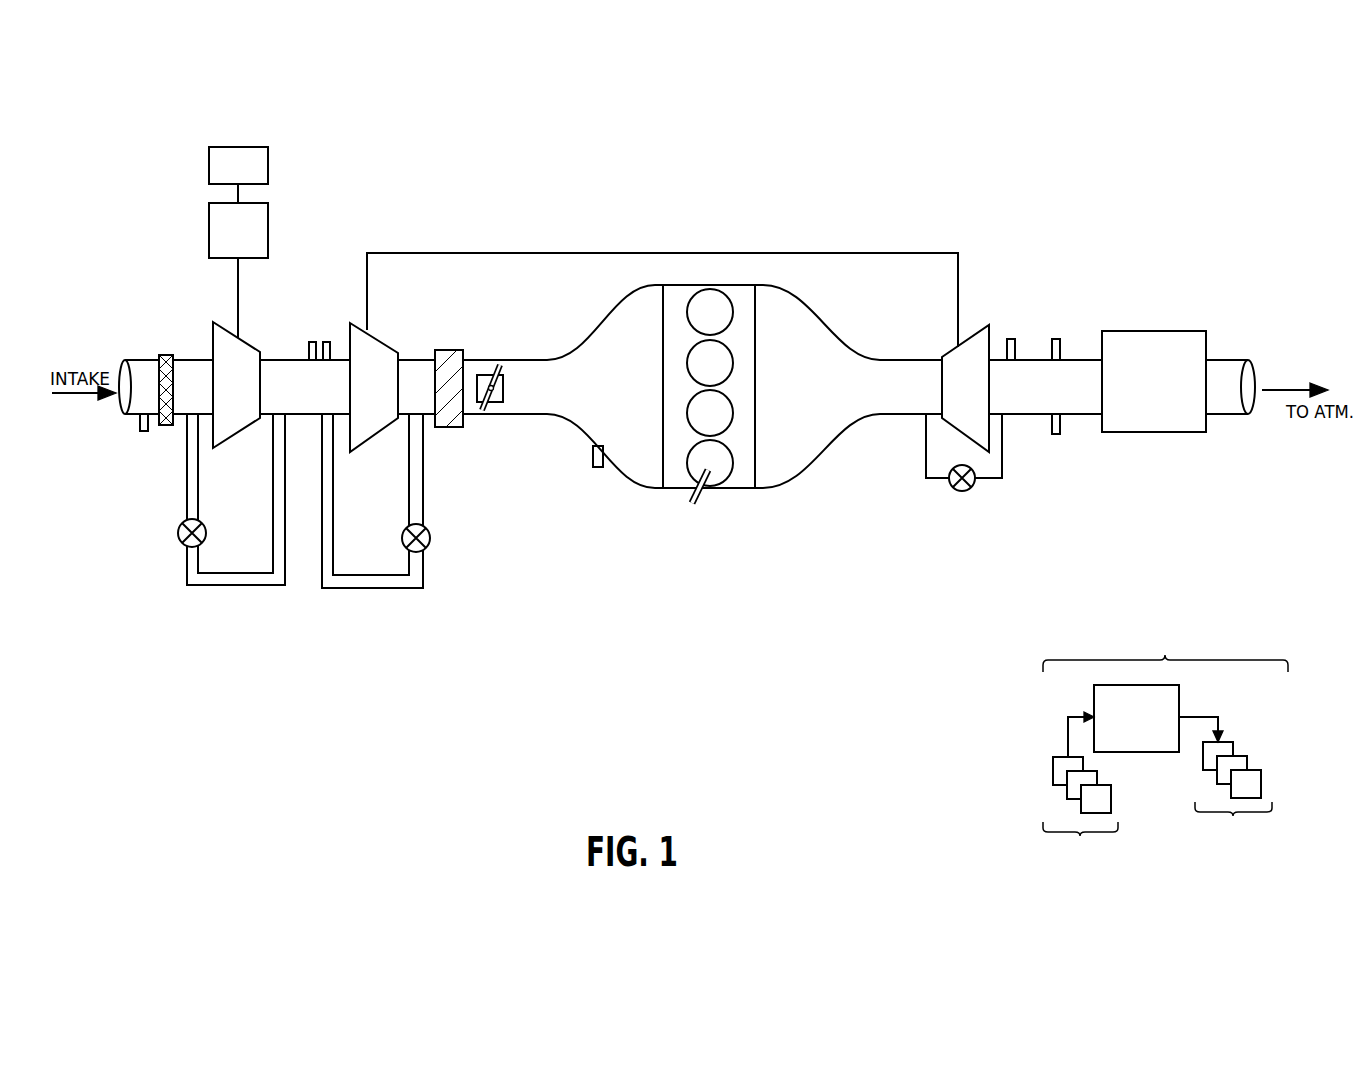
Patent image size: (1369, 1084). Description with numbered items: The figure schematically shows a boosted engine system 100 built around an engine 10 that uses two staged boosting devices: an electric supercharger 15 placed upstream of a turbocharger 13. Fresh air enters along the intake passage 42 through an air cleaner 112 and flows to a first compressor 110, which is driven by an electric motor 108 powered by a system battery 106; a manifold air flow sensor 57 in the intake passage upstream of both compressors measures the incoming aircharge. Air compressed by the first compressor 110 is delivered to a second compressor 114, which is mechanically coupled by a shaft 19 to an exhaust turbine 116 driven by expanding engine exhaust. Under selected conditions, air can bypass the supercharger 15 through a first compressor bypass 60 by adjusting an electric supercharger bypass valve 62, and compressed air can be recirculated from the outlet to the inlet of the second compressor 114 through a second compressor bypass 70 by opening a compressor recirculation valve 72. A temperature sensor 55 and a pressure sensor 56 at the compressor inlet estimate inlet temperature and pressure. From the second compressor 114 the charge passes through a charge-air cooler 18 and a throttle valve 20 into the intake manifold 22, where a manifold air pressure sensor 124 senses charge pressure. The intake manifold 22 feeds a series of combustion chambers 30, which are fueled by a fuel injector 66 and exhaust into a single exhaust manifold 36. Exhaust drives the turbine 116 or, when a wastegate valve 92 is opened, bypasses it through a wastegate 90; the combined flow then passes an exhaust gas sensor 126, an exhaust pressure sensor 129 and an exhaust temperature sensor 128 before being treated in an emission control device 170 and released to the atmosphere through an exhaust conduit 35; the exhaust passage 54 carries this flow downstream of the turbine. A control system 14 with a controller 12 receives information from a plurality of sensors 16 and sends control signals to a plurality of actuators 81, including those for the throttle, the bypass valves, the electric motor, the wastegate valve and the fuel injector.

The engine system 100 is at (1212, 128).
The electric supercharger 15 is at (137, 280).
The turbocharger 13 is at (408, 286).
The shaft 19 is at (862, 253).
The system battery 106 is at (238, 165).
The electric motor 108 is at (238, 261).
The first compressor 110 is at (236, 385).
The air cleaner 112 is at (166, 354).
The second compressor 114 is at (374, 387).
The exhaust turbine 116 is at (965, 388).
The temperature sensor 55 is at (312, 341).
The pressure sensor 56 is at (326, 341).
The manifold air flow sensor 57 is at (144, 433).
The intake passage 42 is at (133, 416).
The first compressor bypass 60 is at (186, 487).
The electric supercharger bypass valve 62 is at (178, 526).
The second compressor bypass 70 is at (409, 490).
The compressor recirculation valve 72 is at (403, 530).
The charge-air cooler 18 is at (448, 349).
The throttle valve 20 is at (495, 409).
The intake manifold 22 is at (605, 386).
The combustion chambers 30 is at (730, 306).
The engine 10 is at (756, 369).
The exhaust manifold 36 is at (848, 386).
The fuel injector 66 is at (700, 494).
The manifold air pressure sensor 124 is at (593, 452).
The exhaust gas sensor 126 is at (1011, 338).
The exhaust pressure sensor 129 is at (1056, 338).
The exhaust temperature sensor 128 is at (1056, 434).
The exhaust passage 54 is at (1045, 424).
The wastegate 90 is at (925, 478).
The wastegate valve 92 is at (962, 491).
The emission control device 170 is at (1140, 331).
The exhaust conduit 35 is at (1227, 360).
The control system 14 is at (1165, 643).
The controller 12 is at (1136, 718).
The sensors 16 is at (1080, 794).
The actuators 81 is at (1225, 787).